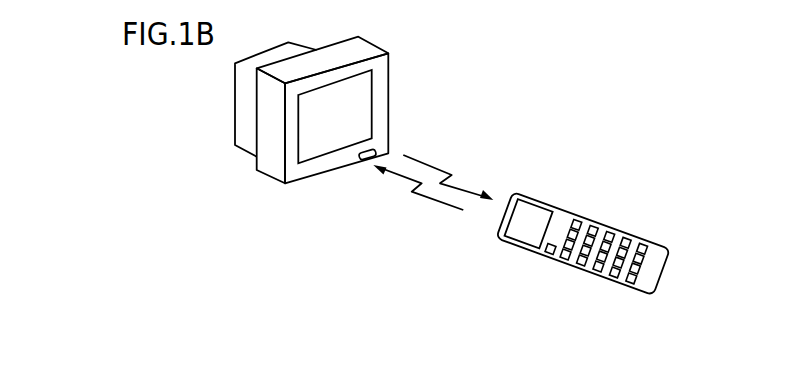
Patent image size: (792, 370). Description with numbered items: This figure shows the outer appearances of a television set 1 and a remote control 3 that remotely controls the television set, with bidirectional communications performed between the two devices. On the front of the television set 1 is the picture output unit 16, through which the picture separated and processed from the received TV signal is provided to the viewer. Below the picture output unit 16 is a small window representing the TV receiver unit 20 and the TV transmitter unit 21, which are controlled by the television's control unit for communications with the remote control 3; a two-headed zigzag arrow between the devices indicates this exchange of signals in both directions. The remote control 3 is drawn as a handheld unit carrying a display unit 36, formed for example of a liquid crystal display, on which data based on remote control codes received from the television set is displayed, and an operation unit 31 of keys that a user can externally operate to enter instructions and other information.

The television set 1 is at (365, 47).
The picture output unit 16 is at (357, 114).
The TV receiver unit 20 is at (359, 182).
The TV transmitter unit 21 is at (365, 160).
The remote control 3 is at (589, 219).
The display unit 36 is at (532, 212).
The operation unit 31 is at (655, 253).